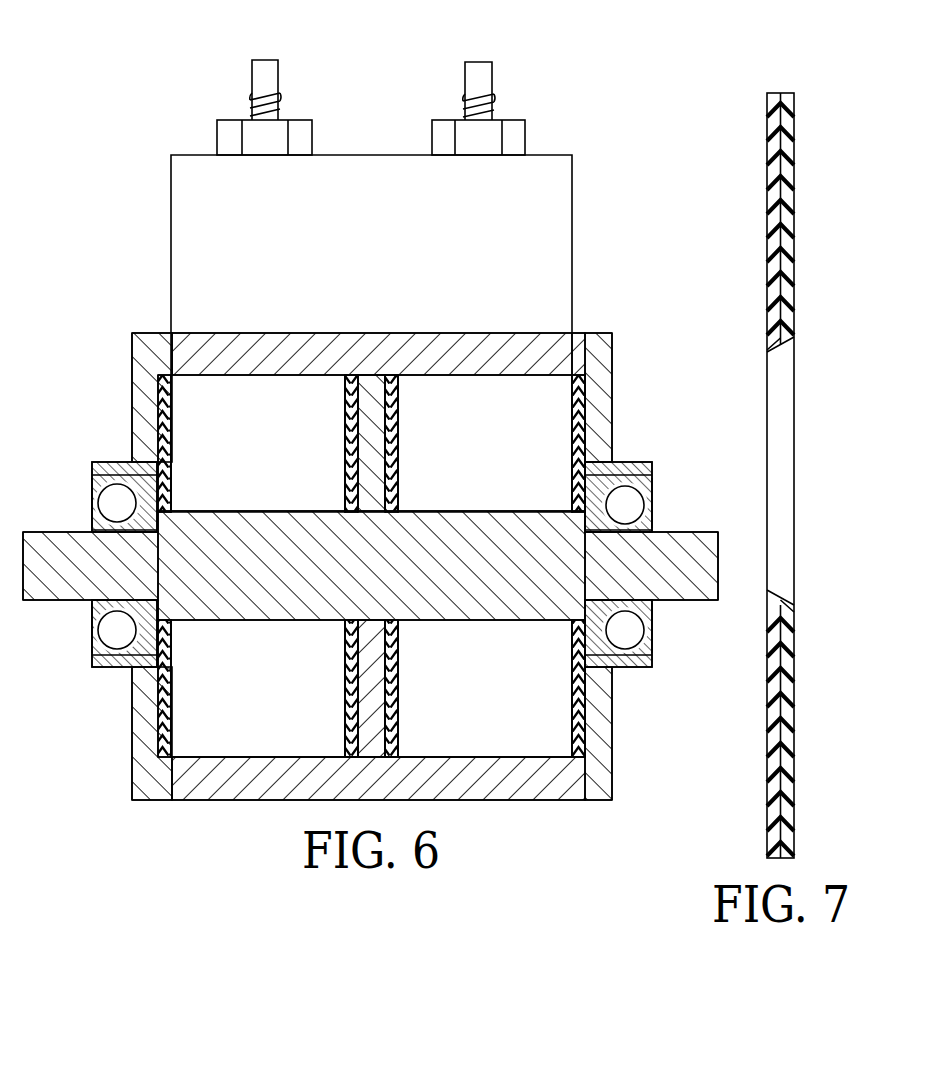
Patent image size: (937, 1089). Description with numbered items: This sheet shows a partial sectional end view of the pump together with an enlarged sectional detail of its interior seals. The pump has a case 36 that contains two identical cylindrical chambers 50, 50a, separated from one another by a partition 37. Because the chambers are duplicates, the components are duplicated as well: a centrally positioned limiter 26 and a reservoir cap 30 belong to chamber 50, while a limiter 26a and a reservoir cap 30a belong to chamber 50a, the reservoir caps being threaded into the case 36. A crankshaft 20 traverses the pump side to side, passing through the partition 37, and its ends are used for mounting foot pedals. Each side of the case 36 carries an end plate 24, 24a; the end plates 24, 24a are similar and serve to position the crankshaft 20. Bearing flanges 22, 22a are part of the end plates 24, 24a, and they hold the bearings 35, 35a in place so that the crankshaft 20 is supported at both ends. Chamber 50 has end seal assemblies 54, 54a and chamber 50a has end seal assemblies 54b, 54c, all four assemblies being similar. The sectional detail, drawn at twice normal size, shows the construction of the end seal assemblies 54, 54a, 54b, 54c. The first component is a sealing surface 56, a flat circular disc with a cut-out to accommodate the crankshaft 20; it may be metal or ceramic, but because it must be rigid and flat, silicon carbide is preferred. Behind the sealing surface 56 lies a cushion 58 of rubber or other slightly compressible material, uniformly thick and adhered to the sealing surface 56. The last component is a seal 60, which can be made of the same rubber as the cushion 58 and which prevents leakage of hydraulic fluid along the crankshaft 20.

In FIG. 6, the crankshaft 20 is at (63, 530).
In FIG. 6, the bearing flange 22 is at (105, 462).
In FIG. 6, the bearing flange 22a is at (622, 462).
In FIG. 6, the end plate 24 is at (148, 330).
In FIG. 6, the end plate 24a is at (612, 352).
In FIG. 6, the limiter 26 is at (250, 80).
In FIG. 6, the limiter 26a is at (463, 82).
In FIG. 6, the reservoir cap 30 is at (315, 140).
In FIG. 6, the reservoir cap 30a is at (526, 140).
In FIG. 6, the bearing 35 is at (92, 497).
In FIG. 6, the bearing 35a is at (652, 507).
In FIG. 6, the case 36 is at (535, 247).
In FIG. 6, the partition 37 is at (372, 653).
In FIG. 6, the chamber 50 is at (287, 490).
In FIG. 6, the chamber 50a is at (520, 492).
In FIG. 6, the end seal assembly 54 is at (170, 388).
In FIG. 6, the end seal assembly 54a is at (347, 458).
In FIG. 6, the end seal assembly 54b is at (399, 395).
In FIG. 6, the end seal assembly 54c is at (572, 405).
In FIG. 7, the sealing surface 56 is at (766, 153).
In FIG. 7, the cushion 58 is at (795, 200).
In FIG. 7, the seal 60 is at (767, 365).